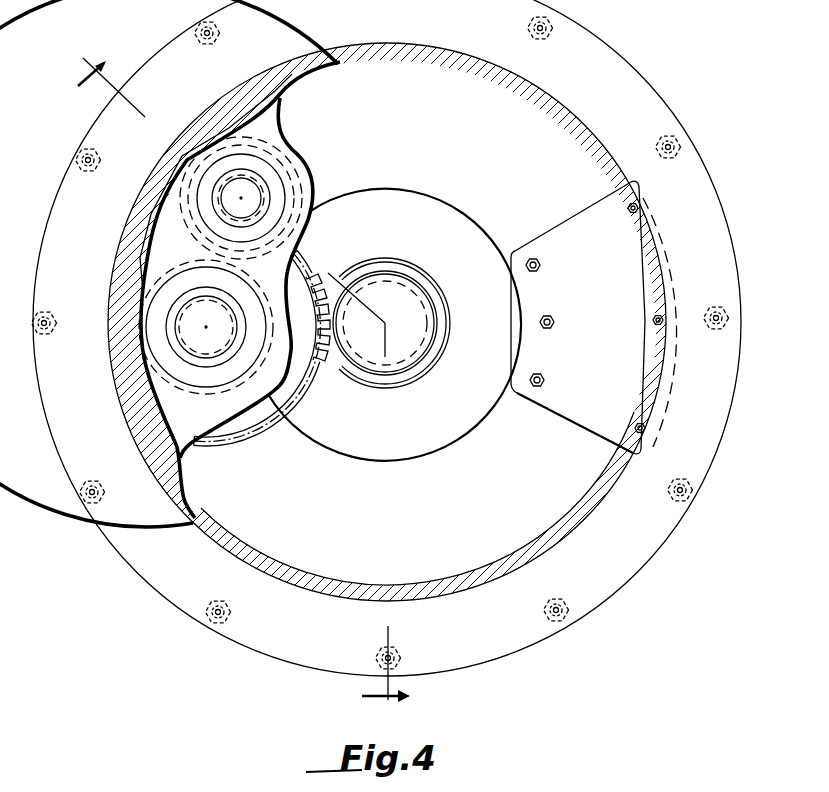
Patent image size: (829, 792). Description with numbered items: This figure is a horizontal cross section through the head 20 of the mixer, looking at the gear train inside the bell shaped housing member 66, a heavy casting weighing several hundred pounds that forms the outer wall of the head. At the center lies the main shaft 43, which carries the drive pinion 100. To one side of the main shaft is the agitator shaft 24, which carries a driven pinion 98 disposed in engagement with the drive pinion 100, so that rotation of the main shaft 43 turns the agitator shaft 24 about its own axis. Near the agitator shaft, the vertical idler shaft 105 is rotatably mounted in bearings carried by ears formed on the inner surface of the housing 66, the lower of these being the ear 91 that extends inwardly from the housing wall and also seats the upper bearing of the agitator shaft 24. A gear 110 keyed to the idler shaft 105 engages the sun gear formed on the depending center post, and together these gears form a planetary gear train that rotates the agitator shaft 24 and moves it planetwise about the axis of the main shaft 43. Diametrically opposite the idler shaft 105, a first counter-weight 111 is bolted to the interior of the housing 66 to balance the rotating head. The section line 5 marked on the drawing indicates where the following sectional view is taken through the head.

The section line 5- 5 is at (236, 382).
The head 20 is at (600, 138).
The agitator shaft 24 is at (202, 335).
The main shaft 43 is at (408, 313).
The housing member 66 is at (552, 76).
The ear 91 is at (166, 413).
The driven pinion 98 is at (266, 430).
The drive pinion 100 is at (418, 376).
The idler shaft 105 is at (243, 197).
The gear 110 is at (312, 225).
The first counter-weight 111 is at (575, 243).